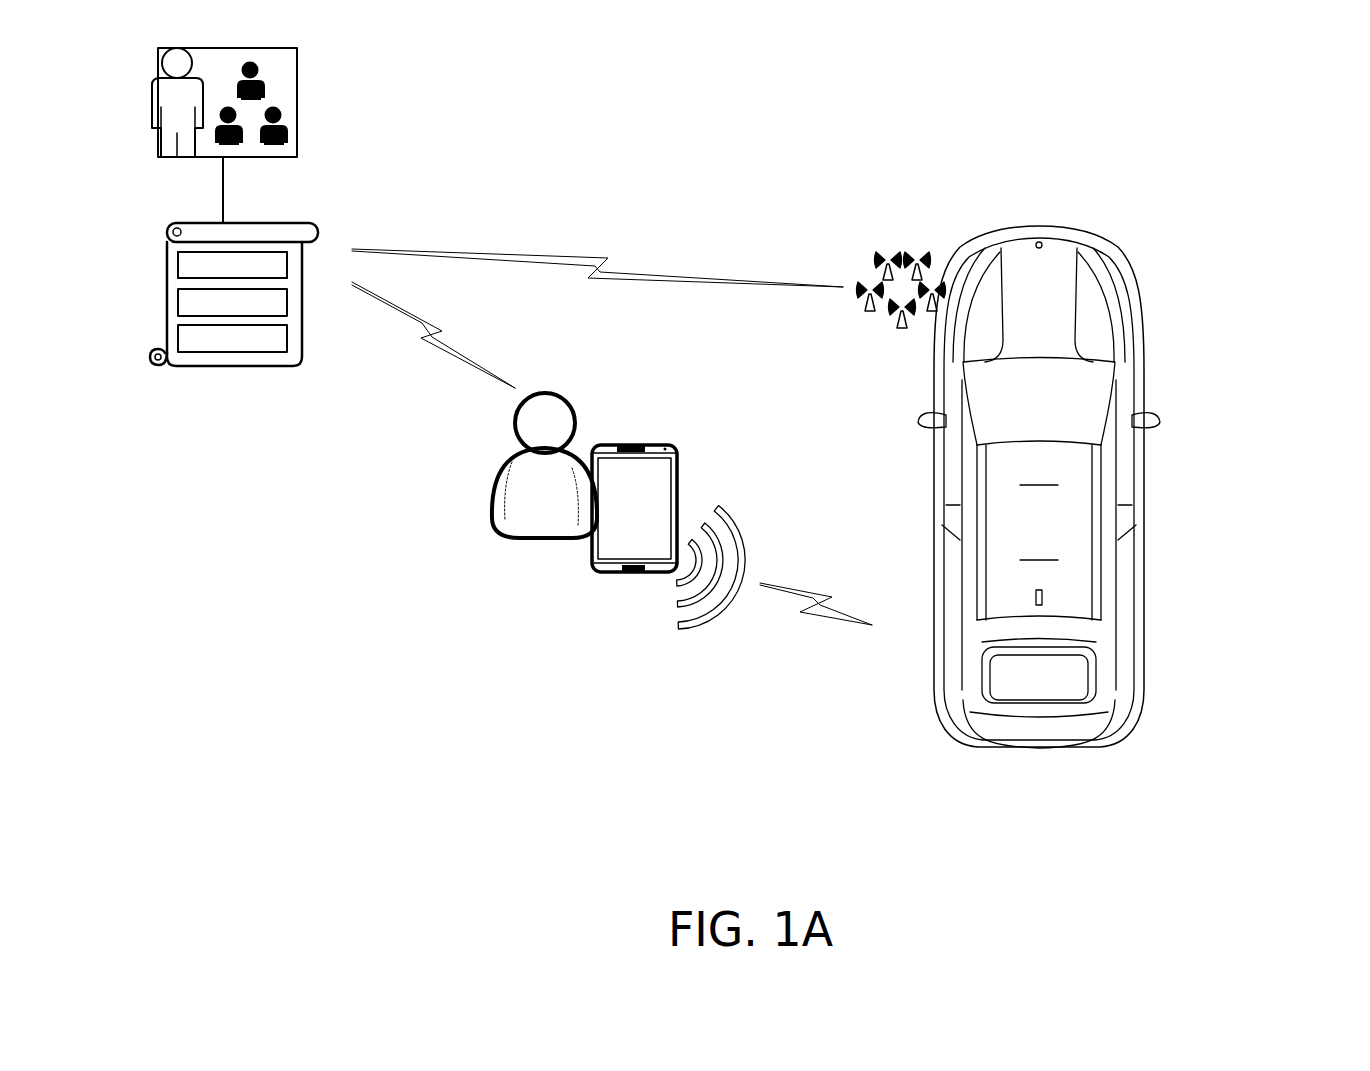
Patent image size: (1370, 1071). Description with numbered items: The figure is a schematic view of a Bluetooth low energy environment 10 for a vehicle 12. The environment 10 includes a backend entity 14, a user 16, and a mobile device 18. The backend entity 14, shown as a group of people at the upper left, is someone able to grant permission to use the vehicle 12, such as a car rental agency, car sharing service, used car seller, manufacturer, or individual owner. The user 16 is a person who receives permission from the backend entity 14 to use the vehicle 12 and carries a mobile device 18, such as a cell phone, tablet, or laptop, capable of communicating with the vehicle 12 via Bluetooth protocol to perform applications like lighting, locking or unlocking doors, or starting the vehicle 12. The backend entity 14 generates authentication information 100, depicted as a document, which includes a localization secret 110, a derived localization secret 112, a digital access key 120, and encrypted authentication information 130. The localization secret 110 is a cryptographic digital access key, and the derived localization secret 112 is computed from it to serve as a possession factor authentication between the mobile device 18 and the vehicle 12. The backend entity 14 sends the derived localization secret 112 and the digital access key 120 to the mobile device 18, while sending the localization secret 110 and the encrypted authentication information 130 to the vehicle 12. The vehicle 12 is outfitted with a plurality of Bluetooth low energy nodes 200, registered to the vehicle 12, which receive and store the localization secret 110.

The Bluetooth low energy environment 10 is at (1237, 133).
The vehicle 12 is at (1142, 688).
The backend entity 14 is at (297, 95).
The user 16 is at (500, 518).
The mobile device 18 is at (657, 445).
The authentication information 100 is at (234, 367).
The localization secret 110 is at (232, 265).
The derived localization secret 112 is at (232, 265).
The digital access key 120 is at (232, 301).
The encrypted authentication information 130 is at (232, 337).
The Bluetooth low energy nodes 200 is at (904, 220).